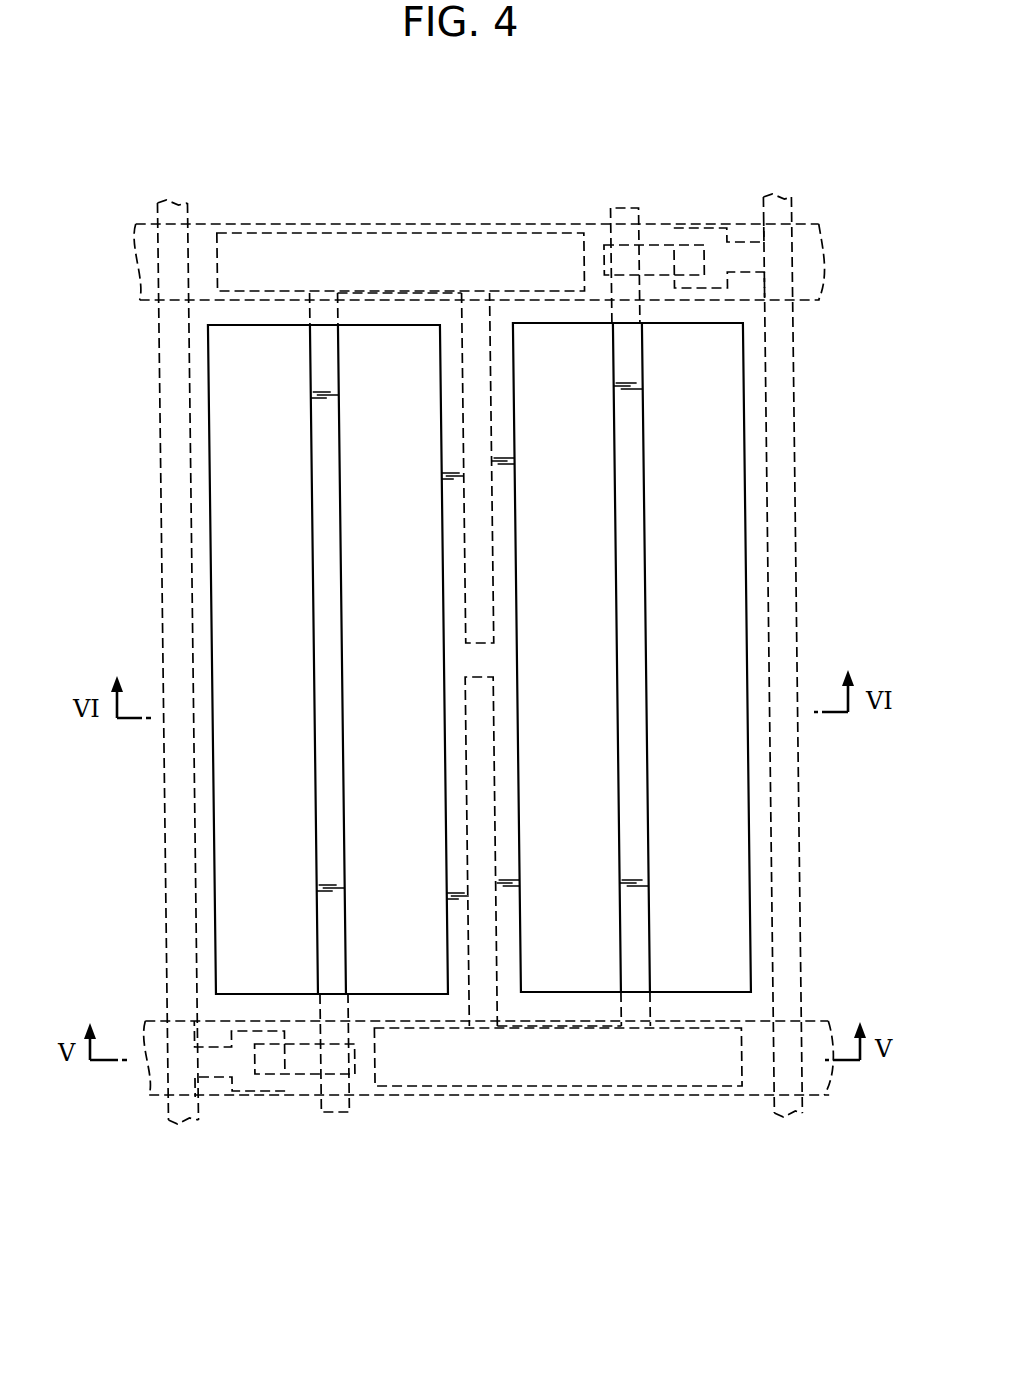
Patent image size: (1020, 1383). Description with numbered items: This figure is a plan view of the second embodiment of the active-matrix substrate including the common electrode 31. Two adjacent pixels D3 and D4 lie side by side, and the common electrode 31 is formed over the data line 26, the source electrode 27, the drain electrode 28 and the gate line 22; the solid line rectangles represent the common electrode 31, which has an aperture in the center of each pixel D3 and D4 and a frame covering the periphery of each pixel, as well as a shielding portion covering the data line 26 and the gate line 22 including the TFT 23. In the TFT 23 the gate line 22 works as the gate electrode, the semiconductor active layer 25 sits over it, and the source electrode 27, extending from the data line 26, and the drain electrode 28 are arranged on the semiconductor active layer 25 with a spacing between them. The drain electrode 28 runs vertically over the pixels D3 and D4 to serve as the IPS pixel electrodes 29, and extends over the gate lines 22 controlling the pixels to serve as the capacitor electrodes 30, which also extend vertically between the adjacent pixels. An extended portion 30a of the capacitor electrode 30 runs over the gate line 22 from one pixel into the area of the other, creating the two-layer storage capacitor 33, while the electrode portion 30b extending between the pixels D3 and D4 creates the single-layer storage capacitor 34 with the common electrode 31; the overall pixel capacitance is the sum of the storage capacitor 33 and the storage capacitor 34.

The gate line 22 is at (497, 222).
The TFT 23 is at (660, 242).
The semiconductor active layer 25 is at (652, 300).
The data line 26 is at (178, 508).
The source electrode 27 is at (718, 245).
The drain electrode 28 is at (627, 208).
The IPS pixel electrode 29 is at (325, 605).
The capacitor electrode 30 is at (349, 228).
The extended portion of the capacitor electrode 30a is at (277, 252).
The electrode portion 30b is at (464, 420).
The common electrode 31 is at (455, 520).
The storage capacitor 33 is at (553, 229).
The storage capacitor 34 is at (460, 572).
The pixel D3 is at (750, 527).
The pixel D4 is at (205, 812).